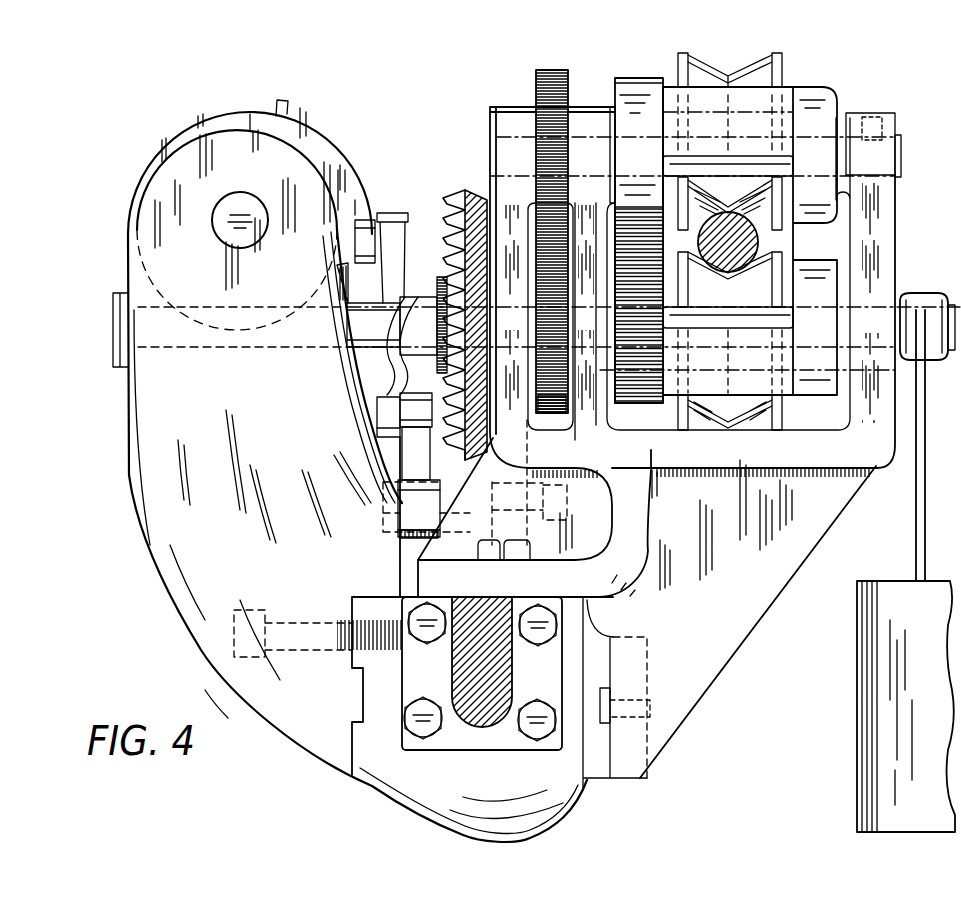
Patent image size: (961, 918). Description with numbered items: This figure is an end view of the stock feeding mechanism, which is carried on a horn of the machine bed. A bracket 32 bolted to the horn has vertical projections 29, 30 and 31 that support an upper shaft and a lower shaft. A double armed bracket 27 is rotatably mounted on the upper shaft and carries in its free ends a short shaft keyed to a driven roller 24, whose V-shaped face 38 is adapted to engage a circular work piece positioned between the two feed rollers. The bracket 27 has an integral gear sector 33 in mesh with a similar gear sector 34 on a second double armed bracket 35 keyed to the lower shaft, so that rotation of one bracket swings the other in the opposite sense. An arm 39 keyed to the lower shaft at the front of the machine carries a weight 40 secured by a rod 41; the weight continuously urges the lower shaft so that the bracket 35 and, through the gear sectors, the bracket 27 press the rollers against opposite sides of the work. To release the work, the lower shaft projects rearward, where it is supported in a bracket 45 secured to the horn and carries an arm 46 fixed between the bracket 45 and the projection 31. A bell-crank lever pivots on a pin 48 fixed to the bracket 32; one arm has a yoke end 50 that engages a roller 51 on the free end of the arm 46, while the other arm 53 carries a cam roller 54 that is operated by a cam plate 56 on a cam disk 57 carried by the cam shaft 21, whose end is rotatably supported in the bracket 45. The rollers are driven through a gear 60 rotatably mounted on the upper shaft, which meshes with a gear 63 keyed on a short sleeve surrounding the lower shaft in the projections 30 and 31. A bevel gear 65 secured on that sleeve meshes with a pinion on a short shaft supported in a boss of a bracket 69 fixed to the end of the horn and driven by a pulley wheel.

The cam shaft 21 is at (212, 212).
The driven roller 24 is at (782, 75).
The double armed bracket 27 is at (812, 100).
The vertical projection 29 is at (853, 121).
The vertical projection 30 is at (590, 107).
The vertical projection 31 is at (490, 107).
The bracket 32 is at (765, 600).
The gear sector 33 is at (640, 80).
The gear sector 34 is at (652, 392).
The double armed bracket 35 is at (800, 385).
The V-shaped face 38 is at (753, 66).
The arm 39 is at (914, 296).
The weight 40 is at (857, 714).
The rod 41 is at (916, 515).
The bracket 45 is at (143, 468).
The arm 46 is at (390, 380).
The pin 48 is at (385, 532).
The yoke end 50 is at (410, 447).
The roller 51 is at (405, 405).
The arm of bell-crank lever 53 is at (396, 213).
The cam roller 54 is at (358, 220).
The cam plate 56 is at (305, 122).
The cam disk 57 is at (190, 125).
The gear 60 is at (548, 72).
The gear 63 is at (550, 405).
The bevel gear 65 is at (470, 192).
The bracket 69 is at (500, 668).